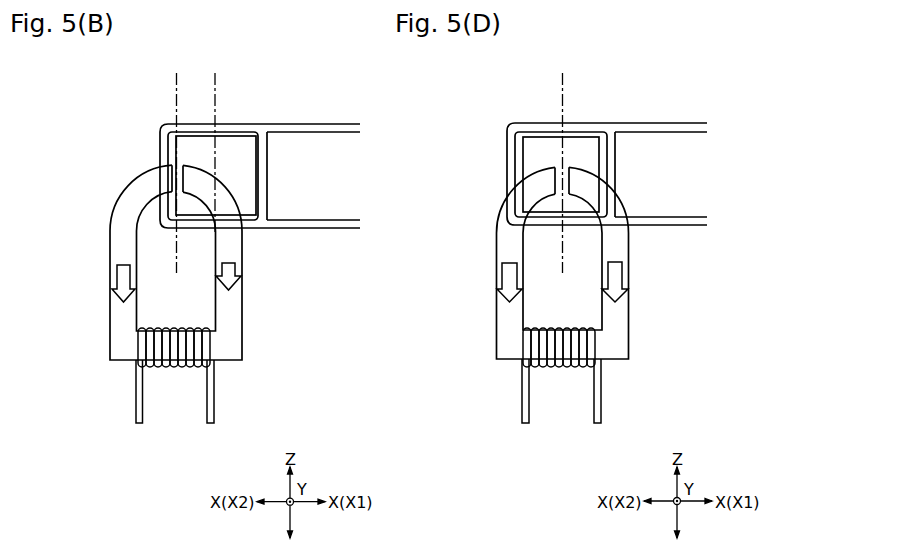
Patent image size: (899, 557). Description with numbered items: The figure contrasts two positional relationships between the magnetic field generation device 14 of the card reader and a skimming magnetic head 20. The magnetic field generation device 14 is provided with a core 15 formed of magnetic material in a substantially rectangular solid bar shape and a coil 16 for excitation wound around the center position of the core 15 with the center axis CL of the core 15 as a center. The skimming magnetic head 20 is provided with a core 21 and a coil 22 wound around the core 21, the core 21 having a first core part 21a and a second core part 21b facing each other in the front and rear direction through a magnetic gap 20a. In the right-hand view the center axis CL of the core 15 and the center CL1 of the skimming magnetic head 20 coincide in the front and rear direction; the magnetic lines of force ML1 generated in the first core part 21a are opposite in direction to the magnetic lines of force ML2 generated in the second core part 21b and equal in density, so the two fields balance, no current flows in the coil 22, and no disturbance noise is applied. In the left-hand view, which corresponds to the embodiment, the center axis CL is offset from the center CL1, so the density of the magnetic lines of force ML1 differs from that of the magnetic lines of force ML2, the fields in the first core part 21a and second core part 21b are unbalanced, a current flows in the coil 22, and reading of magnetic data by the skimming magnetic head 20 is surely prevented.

In FIG. 5B, the magnetic field generation device 14 is at (261, 175).
In FIG. 5D, the magnetic field generation device 14 is at (515, 174).
In FIG. 5B, the core 15 is at (257, 155).
In FIG. 5D, the core 15 is at (522, 145).
In FIG. 5B, the coil 16 is at (268, 197).
In FIG. 5D, the coil 16 is at (507, 173).
In FIG. 5B, the skimming magnetic head 20 is at (162, 245).
In FIG. 5D, the skimming magnetic head 20 is at (550, 250).
In FIG. 5B, the magnetic gap 20a is at (172, 170).
In FIG. 5D, the magnetic gap 20a is at (564, 176).
In FIG. 5B, the core 21 is at (162, 295).
In FIG. 5D, the core 21 is at (550, 296).
In FIG. 5B, the first core part 21a is at (110, 340).
In FIG. 5D, the first core part 21a is at (497, 340).
In FIG. 5B, the second core part 21b is at (242, 328).
In FIG. 5D, the second core part 21b is at (628, 327).
In FIG. 5B, the coil 22 is at (175, 367).
In FIG. 5D, the coil 22 is at (560, 368).
In FIG. 5B, the magnetic lines of force ML1 is at (110, 278).
In FIG. 5D, the magnetic lines of force ML1 is at (500, 276).
In FIG. 5B, the magnetic lines of force ML2 is at (242, 270).
In FIG. 5D, the magnetic lines of force ML2 is at (628, 270).
In FIG. 5B, the center axis CL is at (216, 103).
In FIG. 5D, the center axis CL is at (613, 173).
In FIG. 5B, the center CL1 is at (176, 88).
In FIG. 5D, the center CL1 is at (563, 102).